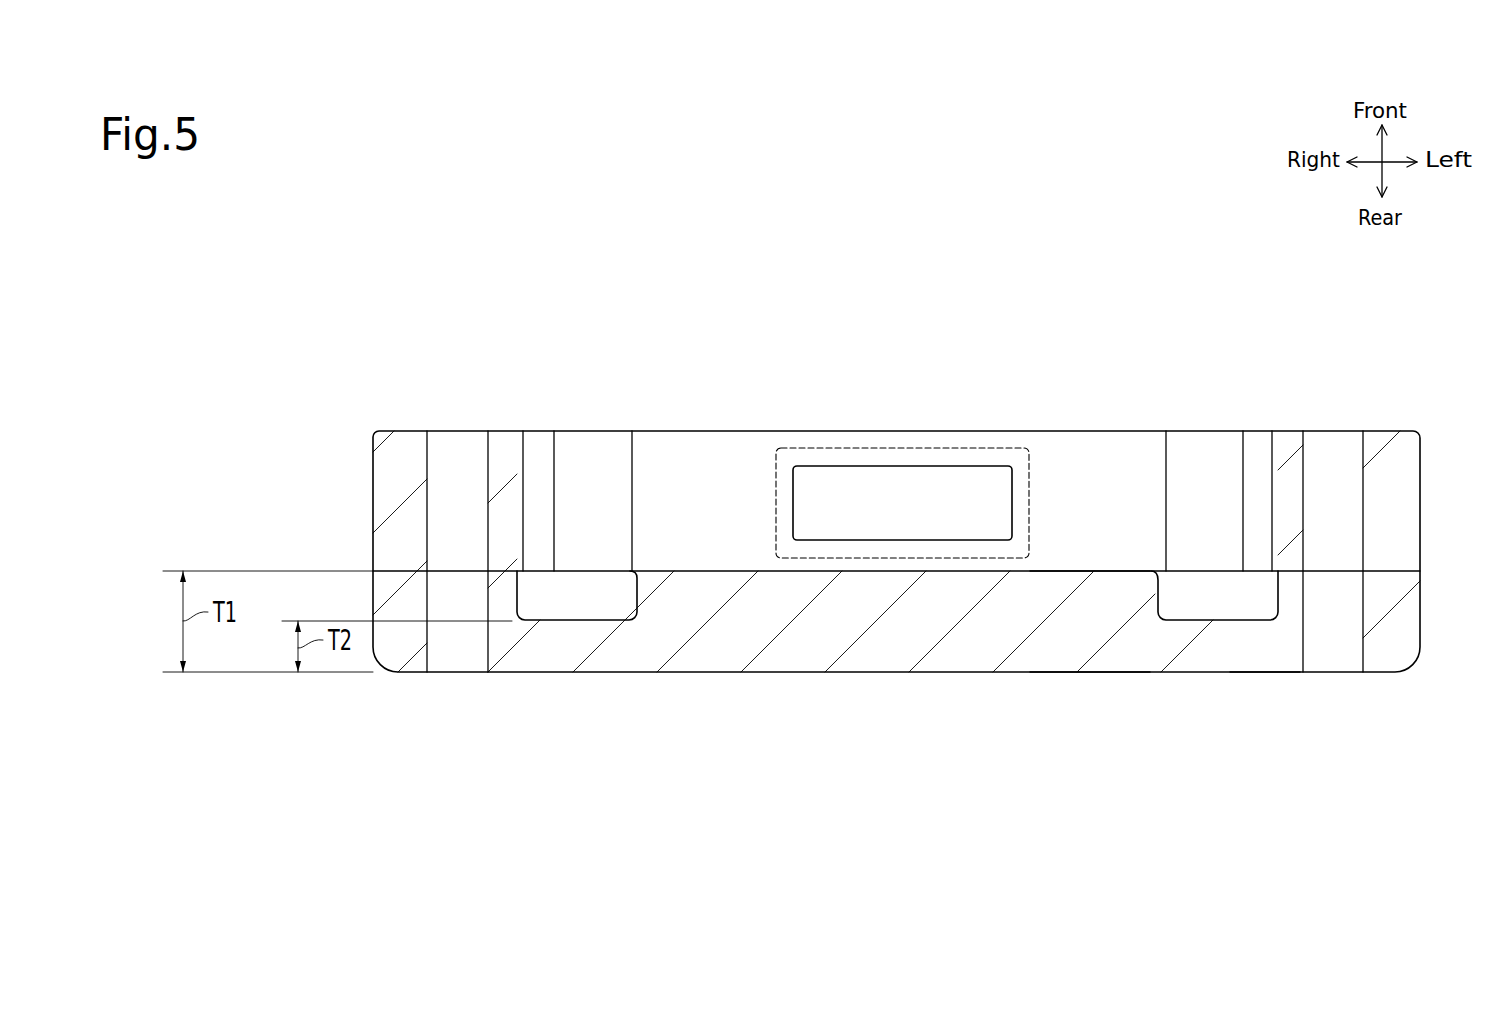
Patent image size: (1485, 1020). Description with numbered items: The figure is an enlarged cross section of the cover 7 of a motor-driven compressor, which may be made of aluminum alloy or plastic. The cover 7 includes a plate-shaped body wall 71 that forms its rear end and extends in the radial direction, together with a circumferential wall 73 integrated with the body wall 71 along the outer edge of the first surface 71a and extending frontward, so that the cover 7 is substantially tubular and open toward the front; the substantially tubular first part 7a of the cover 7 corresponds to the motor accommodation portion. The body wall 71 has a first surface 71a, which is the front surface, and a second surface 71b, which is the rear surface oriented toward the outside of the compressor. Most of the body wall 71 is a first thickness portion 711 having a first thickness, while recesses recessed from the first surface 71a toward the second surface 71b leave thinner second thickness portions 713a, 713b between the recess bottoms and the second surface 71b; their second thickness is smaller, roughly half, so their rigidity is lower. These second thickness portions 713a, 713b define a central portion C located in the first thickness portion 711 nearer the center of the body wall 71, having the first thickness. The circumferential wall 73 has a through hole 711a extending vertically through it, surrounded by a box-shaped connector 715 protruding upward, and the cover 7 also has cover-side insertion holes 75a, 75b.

The cover 7 is at (1398, 416).
The body wall 71 is at (705, 563).
The first thickness portion 711 is at (773, 603).
The through hole 711a is at (862, 478).
The connector 715 is at (1012, 457).
The first surface 71a is at (1080, 571).
The second surface 71b is at (1080, 672).
The second thickness portion 713a is at (1210, 627).
The second thickness portion 713b is at (575, 630).
The first cover-side insertion hole 75a is at (1363, 633).
The second cover-side insertion hole 75b is at (484, 634).
The first part 7a is at (1276, 676).
The circumferential wall 73 is at (1405, 532).
The central portion C is at (899, 560).